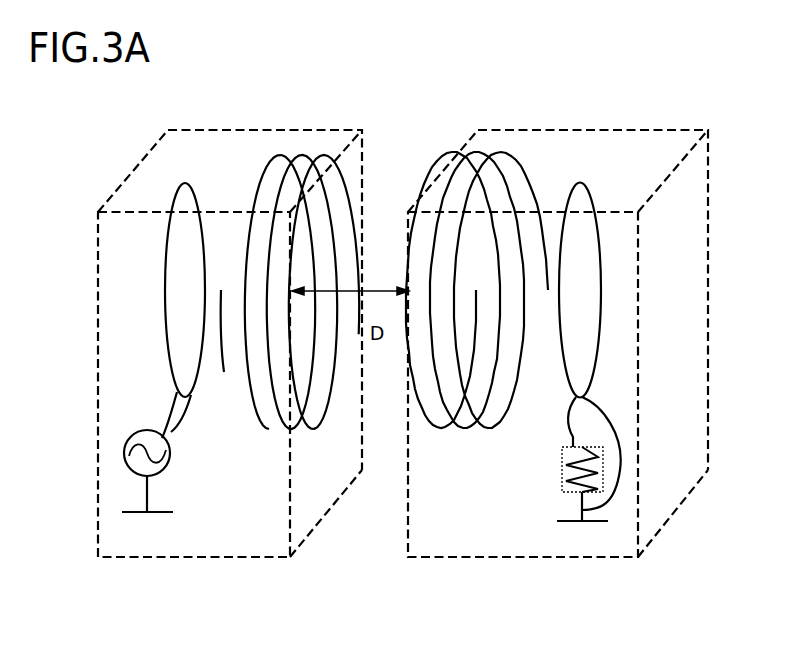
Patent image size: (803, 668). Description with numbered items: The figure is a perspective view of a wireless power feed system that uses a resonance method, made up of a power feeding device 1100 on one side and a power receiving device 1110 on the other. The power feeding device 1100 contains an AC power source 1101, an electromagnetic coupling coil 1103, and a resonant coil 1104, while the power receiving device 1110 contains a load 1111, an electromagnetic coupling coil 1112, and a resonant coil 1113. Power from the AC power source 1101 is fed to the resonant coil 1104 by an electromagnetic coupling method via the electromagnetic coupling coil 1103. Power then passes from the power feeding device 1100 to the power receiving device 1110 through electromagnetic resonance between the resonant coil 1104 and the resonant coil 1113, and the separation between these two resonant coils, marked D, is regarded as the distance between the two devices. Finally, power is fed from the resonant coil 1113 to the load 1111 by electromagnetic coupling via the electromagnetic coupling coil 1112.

The power feeding device 1100 is at (277, 545).
The AC power source 1101 is at (172, 468).
The electromagnetic coupling coil 1103 is at (184, 183).
The resonant coil 1104 is at (325, 155).
The power receiving device 1110 is at (432, 546).
The load 1111 is at (562, 472).
The electromagnetic coupling coil 1112 is at (580, 183).
The resonant coil 1113 is at (478, 152).